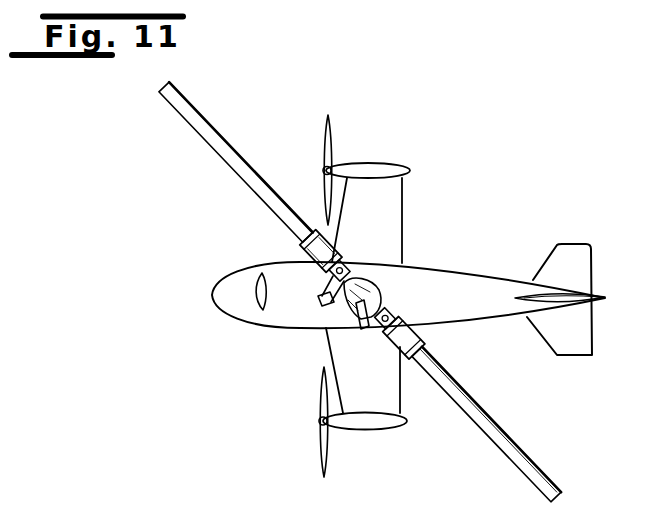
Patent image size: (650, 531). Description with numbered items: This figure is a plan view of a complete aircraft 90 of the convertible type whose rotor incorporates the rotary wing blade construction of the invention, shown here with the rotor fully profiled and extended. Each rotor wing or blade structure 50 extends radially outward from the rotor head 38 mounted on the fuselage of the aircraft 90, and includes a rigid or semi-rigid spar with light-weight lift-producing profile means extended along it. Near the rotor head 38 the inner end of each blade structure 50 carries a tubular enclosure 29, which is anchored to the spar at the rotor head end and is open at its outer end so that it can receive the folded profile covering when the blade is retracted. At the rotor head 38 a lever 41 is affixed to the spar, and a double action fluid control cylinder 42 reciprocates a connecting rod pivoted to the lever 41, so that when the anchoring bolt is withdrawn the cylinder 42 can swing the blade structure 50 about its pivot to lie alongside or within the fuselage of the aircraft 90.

The rotor wing or blade structure 50 is at (243, 157).
The tubular enclosure 29 is at (333, 258).
The lever 41 is at (338, 287).
The rotor head 38 is at (373, 283).
The fluid control cylinder 42 is at (356, 318).
The aircraft 90 is at (474, 283).